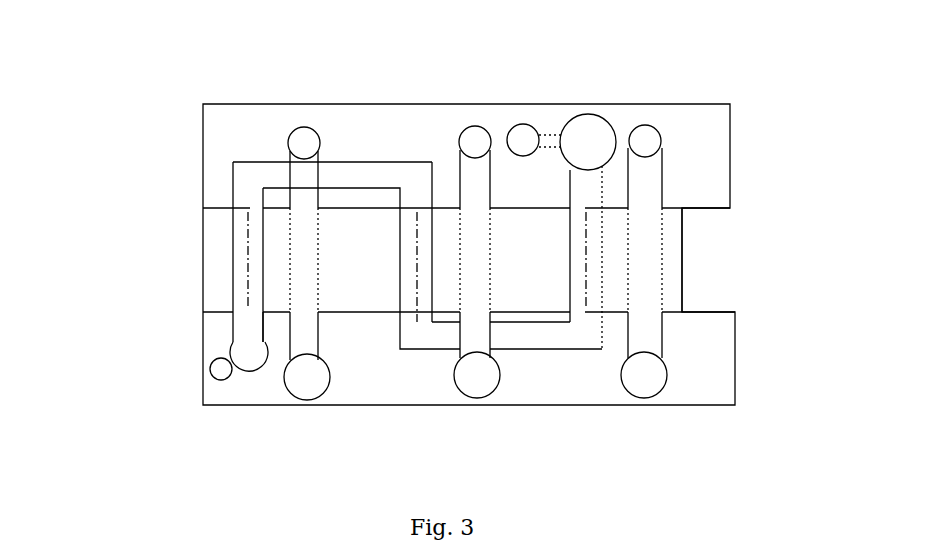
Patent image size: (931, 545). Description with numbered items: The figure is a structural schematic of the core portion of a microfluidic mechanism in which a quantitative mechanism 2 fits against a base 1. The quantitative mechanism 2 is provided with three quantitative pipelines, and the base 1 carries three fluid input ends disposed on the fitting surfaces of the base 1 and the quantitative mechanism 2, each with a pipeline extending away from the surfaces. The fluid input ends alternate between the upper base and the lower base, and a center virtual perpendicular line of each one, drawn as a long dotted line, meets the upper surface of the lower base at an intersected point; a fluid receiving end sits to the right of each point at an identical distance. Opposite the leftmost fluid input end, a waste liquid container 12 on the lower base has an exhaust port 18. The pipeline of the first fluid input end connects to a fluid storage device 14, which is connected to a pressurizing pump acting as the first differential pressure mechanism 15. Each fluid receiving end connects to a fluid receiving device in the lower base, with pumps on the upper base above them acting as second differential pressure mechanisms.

The base 1 is at (680, 160).
The quantitative mechanism 2 is at (215, 260).
The waste liquid container 12 is at (250, 350).
The fluid storage device 14 is at (588, 143).
The first differential pressure mechanism 15 is at (525, 137).
The exhaust port 18 is at (217, 372).